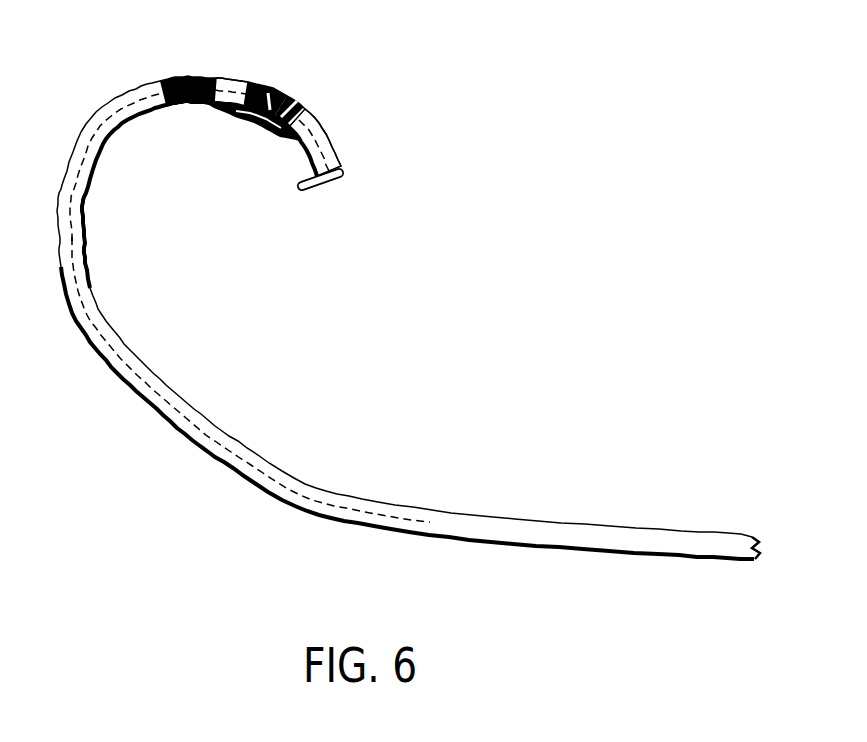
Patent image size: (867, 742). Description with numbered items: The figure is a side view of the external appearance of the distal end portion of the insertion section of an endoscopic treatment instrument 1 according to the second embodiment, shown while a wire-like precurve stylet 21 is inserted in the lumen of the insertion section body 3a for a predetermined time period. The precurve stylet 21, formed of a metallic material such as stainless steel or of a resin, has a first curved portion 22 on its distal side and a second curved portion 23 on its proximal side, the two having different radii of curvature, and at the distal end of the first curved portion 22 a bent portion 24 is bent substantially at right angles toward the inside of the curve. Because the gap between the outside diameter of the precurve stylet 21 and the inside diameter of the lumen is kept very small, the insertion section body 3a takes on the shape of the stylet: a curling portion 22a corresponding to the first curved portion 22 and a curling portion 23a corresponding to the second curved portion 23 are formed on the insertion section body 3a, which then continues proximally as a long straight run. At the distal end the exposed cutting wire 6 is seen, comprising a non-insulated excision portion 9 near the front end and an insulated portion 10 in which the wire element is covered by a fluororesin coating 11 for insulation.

The endoscopic treatment instrument 1 is at (408, 326).
The insertion section body 3a is at (473, 525).
The cutting wire 6 is at (302, 112).
The excision portion 9 is at (286, 139).
The insulated portion 10 is at (225, 110).
The coating 11 is at (243, 92).
The precurve stylet 21 is at (312, 192).
The first curved portion 22 is at (137, 100).
The curling portion 22a is at (100, 130).
The second curved portion 23 is at (239, 468).
The curling portion 23a is at (172, 426).
The bent portion 24 is at (331, 184).